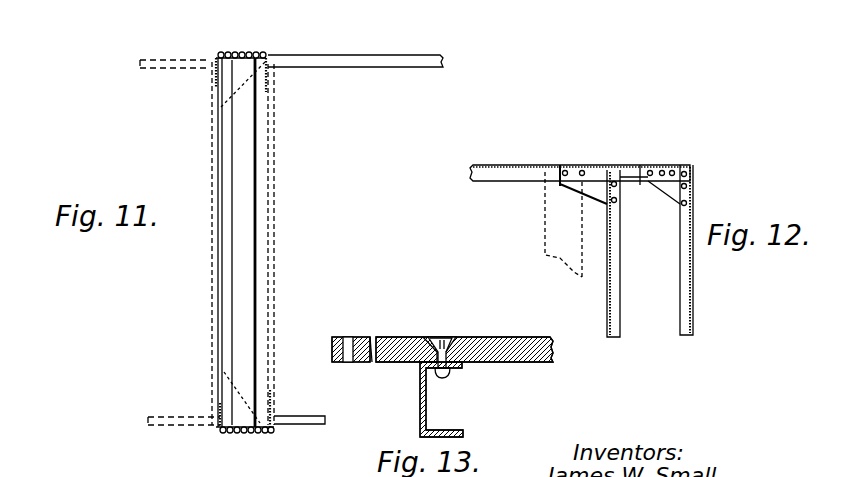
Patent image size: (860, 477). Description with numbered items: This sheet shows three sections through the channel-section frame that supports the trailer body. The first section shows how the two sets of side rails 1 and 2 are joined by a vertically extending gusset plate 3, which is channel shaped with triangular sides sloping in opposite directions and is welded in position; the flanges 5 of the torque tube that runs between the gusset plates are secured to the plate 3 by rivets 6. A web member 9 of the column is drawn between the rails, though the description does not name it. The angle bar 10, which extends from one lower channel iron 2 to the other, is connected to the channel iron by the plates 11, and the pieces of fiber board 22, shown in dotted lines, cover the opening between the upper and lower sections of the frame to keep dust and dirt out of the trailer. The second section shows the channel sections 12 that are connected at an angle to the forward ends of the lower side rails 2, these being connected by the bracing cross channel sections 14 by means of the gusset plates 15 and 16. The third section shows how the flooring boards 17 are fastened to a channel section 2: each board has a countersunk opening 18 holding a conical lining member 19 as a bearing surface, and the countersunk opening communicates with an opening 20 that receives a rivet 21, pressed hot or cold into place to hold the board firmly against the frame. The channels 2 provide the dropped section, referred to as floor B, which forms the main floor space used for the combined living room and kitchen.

In FIG. 11, the side rails 1 is at (171, 58).
In FIG. 11, the side rails 2 is at (355, 58).
In FIG. 12, the side rails 2 is at (520, 165).
In FIG. 13, the side rails 2 is at (420, 398).
In FIG. 11, the gusset plates 3 is at (212, 58).
In FIG. 11, the flanges 5 is at (248, 52).
In FIG. 11, the rivets 6 is at (227, 52).
In FIG. 11, the web of column 9 is at (237, 220).
In FIG. 11, the angle bar 10 is at (228, 356).
In FIG. 11, the plates 11 is at (225, 92).
In FIG. 11, the fiber board 22 is at (276, 152).
In FIG. 12, the channel sections 12 is at (645, 168).
In FIG. 12, the bracing cross channel sections 14 is at (682, 257).
In FIG. 12, the gusset plates 15 is at (683, 170).
In FIG. 12, the gusset plates 16 is at (590, 186).
In FIG. 13, the boards 17 is at (366, 337).
In FIG. 13, the countersunk opening 18 is at (470, 337).
In FIG. 13, the conical lining member 19 is at (450, 340).
In FIG. 13, the opening 20 is at (425, 337).
In FIG. 13, the rivet 21 is at (444, 372).
In FIG. 13, the floor B is at (508, 337).